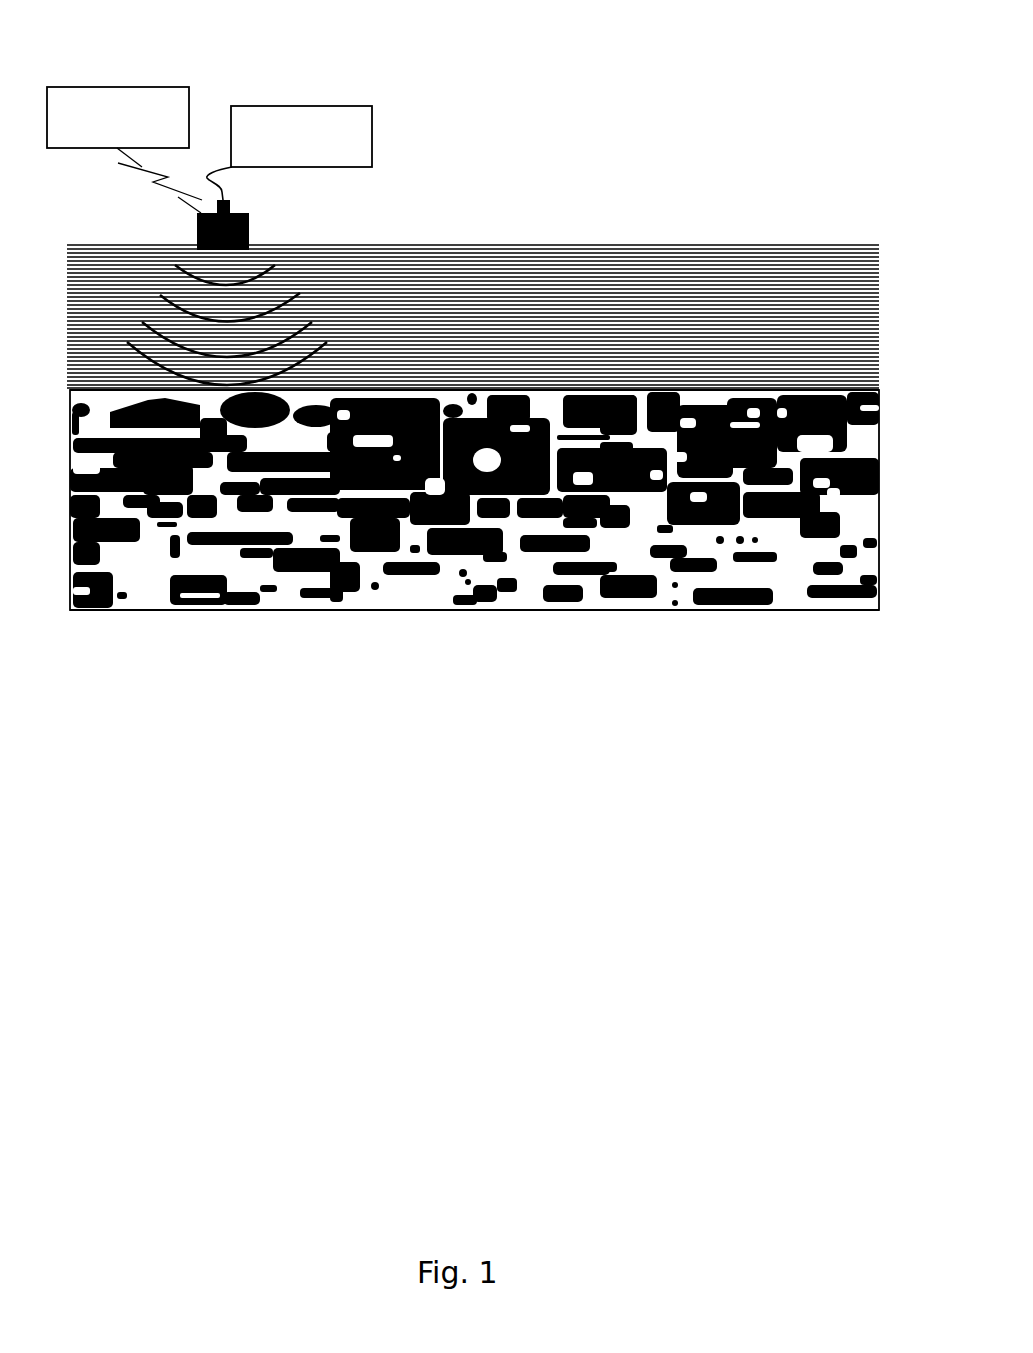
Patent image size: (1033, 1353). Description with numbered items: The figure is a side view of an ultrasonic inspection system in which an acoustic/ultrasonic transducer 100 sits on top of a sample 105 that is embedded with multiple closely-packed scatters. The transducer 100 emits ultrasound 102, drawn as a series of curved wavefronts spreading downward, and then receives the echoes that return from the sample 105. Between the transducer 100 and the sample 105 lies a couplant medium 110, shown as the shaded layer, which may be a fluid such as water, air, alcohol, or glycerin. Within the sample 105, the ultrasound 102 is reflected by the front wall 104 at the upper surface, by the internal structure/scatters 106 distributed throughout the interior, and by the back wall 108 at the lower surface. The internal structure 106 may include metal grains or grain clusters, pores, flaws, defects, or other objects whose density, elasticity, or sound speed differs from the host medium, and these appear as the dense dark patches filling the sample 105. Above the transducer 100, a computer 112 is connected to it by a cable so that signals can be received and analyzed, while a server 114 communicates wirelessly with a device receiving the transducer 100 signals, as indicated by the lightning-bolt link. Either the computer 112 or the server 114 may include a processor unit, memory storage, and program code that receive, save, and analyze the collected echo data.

The acoustic/ultrasonic transducer 100 is at (250, 238).
The ultrasound 102 is at (300, 293).
The front wall 104 is at (458, 390).
The sample 105 is at (880, 460).
The internal structure/scatters 106 is at (633, 402).
The back wall 108 is at (572, 610).
The couplant medium 110 is at (775, 243).
The computer 112 is at (343, 105).
The server 114 is at (148, 86).